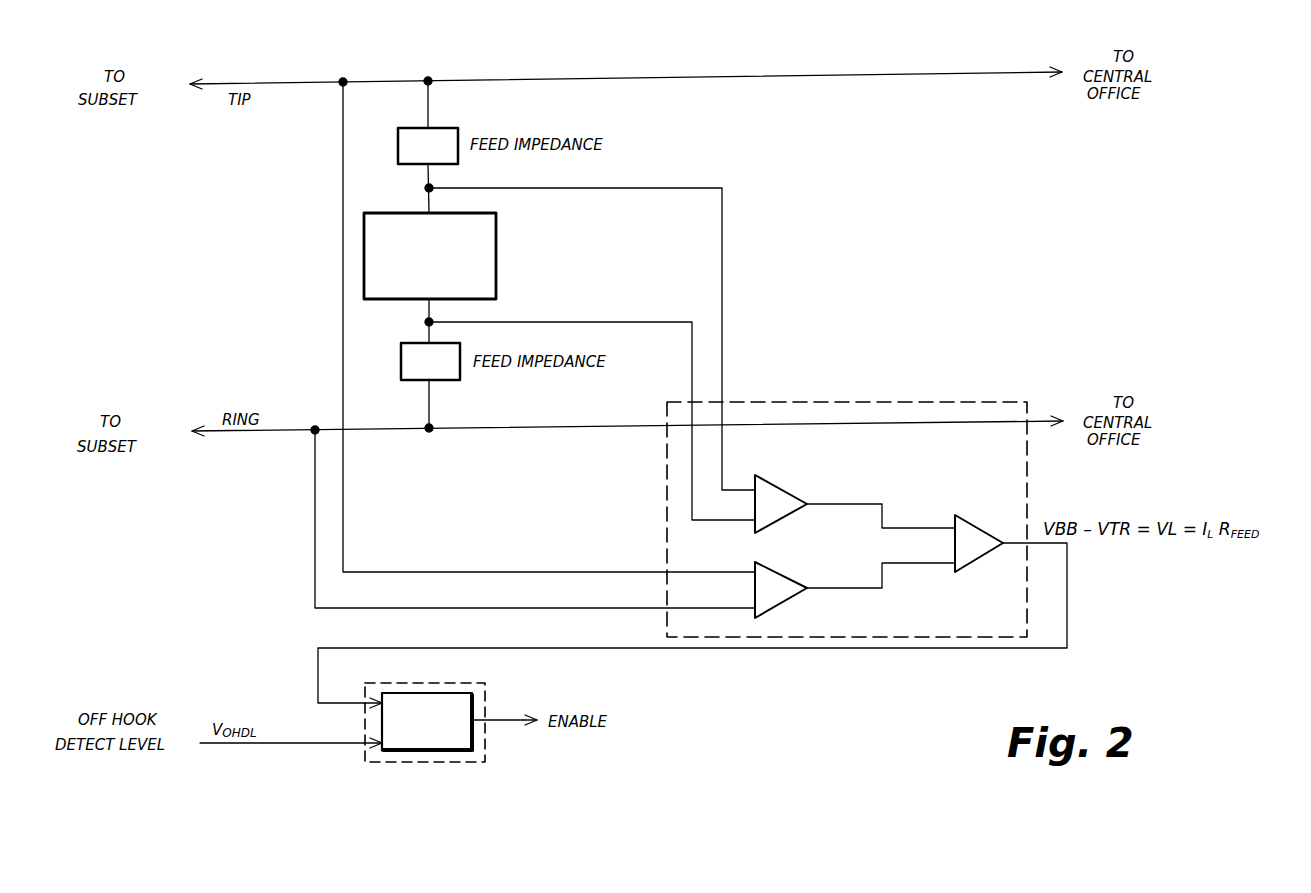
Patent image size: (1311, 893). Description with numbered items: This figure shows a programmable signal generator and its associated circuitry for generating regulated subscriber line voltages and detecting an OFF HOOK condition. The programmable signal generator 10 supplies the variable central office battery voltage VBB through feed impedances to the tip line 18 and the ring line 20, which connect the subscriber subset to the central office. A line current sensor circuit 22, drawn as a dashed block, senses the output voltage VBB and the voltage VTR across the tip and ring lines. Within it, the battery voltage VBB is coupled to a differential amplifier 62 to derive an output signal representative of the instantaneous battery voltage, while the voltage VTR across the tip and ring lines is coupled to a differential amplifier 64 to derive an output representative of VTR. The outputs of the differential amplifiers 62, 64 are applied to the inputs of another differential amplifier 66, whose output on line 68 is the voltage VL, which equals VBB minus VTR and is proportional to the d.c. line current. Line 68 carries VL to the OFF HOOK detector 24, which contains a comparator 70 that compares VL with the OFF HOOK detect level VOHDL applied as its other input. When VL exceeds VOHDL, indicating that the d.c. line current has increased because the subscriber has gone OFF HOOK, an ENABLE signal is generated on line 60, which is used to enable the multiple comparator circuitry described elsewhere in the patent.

The tip line 18 is at (288, 82).
The ring line 20 is at (290, 432).
The programmable signal generator 10 is at (497, 247).
The line current sensor circuit 22 is at (833, 402).
The differential amplifier 62 is at (783, 490).
The differential amplifier 64 is at (773, 571).
The differential amplifier 66 is at (978, 522).
The line 68 is at (1067, 585).
The OFF HOOK detector 24 is at (429, 762).
The comparator 70 is at (470, 693).
The line 60 is at (506, 726).